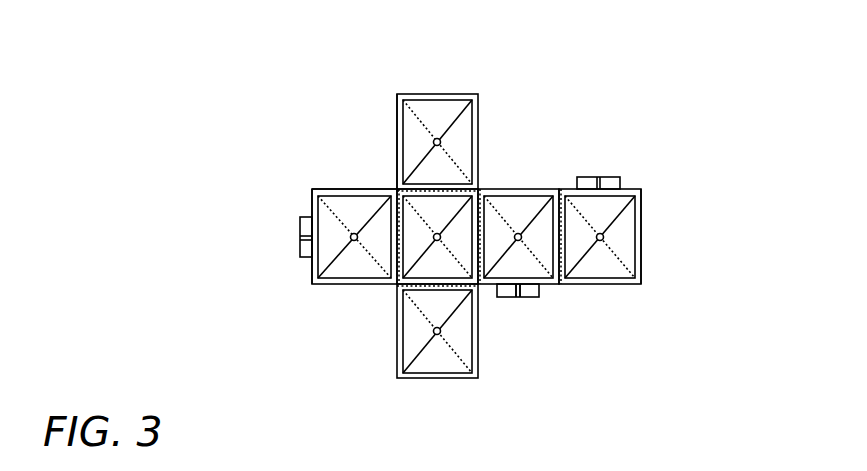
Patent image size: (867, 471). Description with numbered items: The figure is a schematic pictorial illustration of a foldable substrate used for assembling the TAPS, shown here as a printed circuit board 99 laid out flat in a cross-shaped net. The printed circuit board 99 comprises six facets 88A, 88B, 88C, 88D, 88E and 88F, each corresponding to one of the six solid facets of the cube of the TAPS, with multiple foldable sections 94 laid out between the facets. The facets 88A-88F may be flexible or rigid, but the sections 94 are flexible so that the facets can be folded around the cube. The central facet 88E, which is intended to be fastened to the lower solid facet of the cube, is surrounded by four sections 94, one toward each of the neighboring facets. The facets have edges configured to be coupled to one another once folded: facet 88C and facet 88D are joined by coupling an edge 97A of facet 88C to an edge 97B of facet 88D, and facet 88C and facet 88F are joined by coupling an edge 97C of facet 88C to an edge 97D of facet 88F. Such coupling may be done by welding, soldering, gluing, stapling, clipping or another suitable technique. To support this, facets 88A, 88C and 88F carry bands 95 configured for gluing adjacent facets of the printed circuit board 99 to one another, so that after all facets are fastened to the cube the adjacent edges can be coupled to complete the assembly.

The printed circuit board 99 is at (708, 89).
The facet 88A is at (518, 202).
The facet 88B is at (410, 352).
The facet 88C is at (322, 270).
The facet 88D is at (463, 130).
The facet 88E is at (418, 266).
The facet 88F is at (608, 207).
The foldable section 94 is at (550, 266).
The band 95 is at (300, 220).
The edge 97A is at (325, 189).
The edge 97B is at (402, 110).
The edge 97C is at (300, 248).
The edge 97D is at (641, 237).